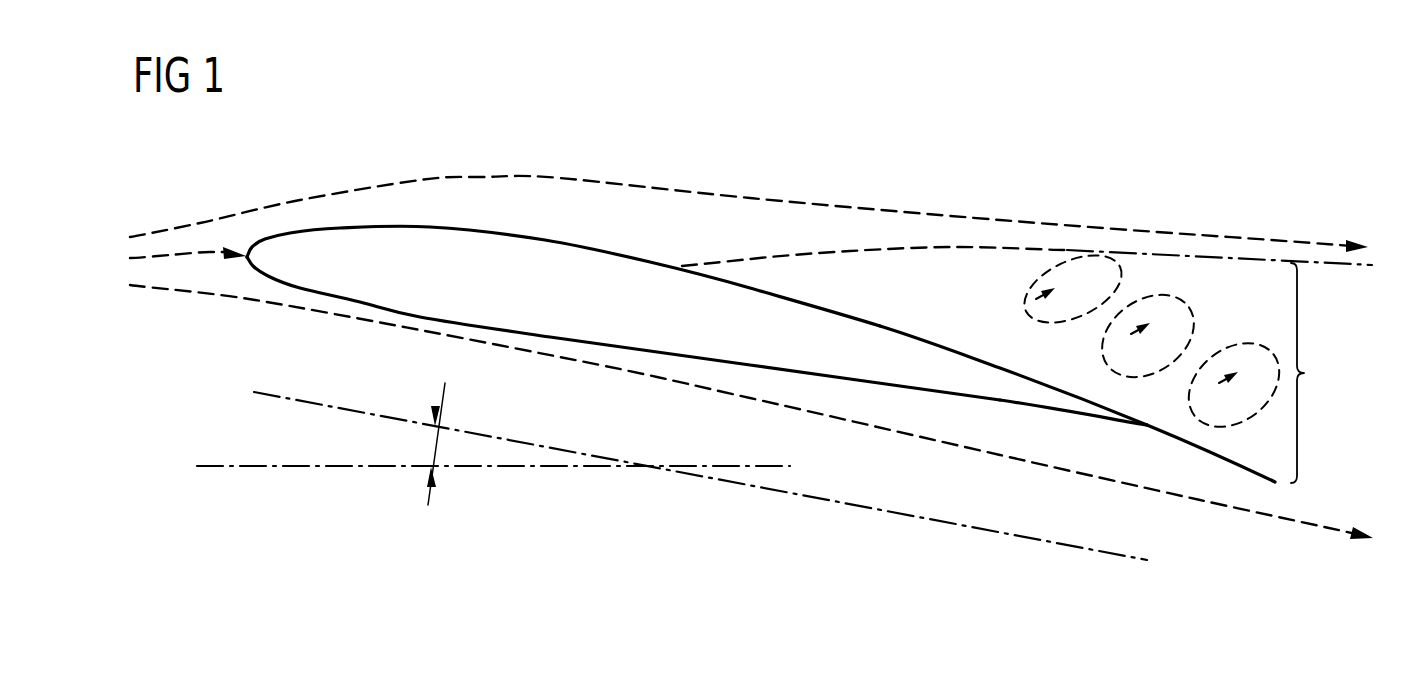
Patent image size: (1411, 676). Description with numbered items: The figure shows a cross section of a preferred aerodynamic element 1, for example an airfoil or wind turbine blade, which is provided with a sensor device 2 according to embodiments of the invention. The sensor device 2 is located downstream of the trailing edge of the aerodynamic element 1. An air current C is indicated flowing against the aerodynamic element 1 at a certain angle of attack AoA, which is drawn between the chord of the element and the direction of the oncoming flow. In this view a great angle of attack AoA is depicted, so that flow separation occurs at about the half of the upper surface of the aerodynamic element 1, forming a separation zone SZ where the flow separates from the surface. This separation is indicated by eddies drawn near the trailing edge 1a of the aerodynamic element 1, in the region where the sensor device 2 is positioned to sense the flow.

The aerodynamic element 1 is at (546, 240).
The trailing edge 1a is at (1063, 398).
The sensor device 2 is at (1232, 466).
The air current C is at (188, 222).
The separation zone SZ is at (1027, 362).
The angle of attack AoA is at (430, 441).